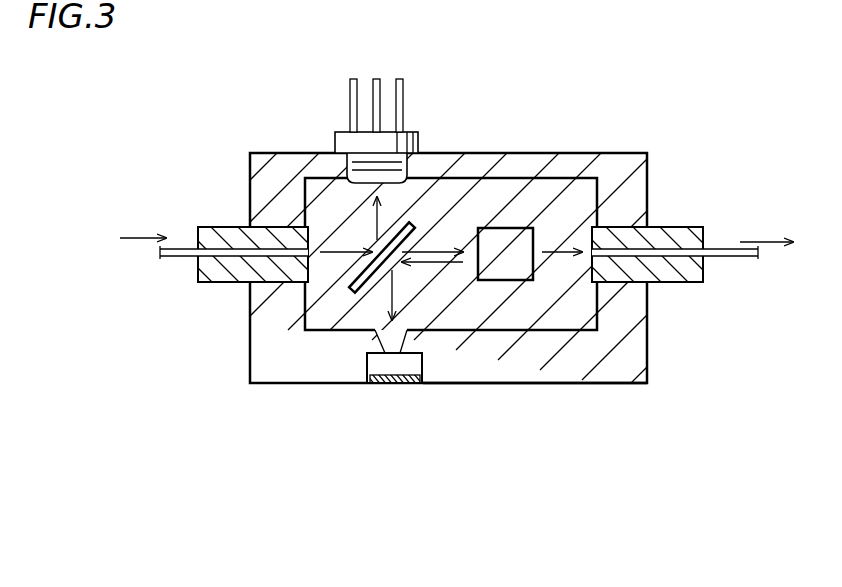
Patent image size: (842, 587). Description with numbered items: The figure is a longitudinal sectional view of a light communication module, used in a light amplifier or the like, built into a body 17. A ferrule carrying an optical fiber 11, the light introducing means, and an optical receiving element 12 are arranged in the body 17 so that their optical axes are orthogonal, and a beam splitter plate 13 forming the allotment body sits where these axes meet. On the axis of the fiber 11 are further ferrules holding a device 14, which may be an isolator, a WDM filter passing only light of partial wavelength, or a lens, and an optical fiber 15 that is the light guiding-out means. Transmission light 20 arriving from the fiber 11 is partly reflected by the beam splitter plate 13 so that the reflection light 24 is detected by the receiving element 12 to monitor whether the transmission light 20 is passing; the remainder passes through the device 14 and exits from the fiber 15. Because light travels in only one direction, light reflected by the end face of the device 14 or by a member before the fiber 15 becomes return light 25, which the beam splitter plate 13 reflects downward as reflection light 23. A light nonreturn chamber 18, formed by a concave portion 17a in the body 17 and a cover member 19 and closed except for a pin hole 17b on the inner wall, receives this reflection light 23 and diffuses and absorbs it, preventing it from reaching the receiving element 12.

The optical fiber 11 is at (243, 255).
The optical receiving element 12 is at (403, 145).
The beam splitter plate 13 is at (412, 235).
The device 14 is at (497, 236).
The optical fiber 15 is at (652, 257).
The body 17 is at (595, 163).
The concave portion 17a is at (423, 362).
The pin hole 17b is at (377, 340).
The light nonreturn chamber 18 is at (379, 360).
The cover member 19 is at (393, 380).
The transmission light 20 is at (336, 250).
The reflection light 23 is at (392, 283).
The reflection light 24 is at (380, 218).
The return light 25 is at (420, 263).